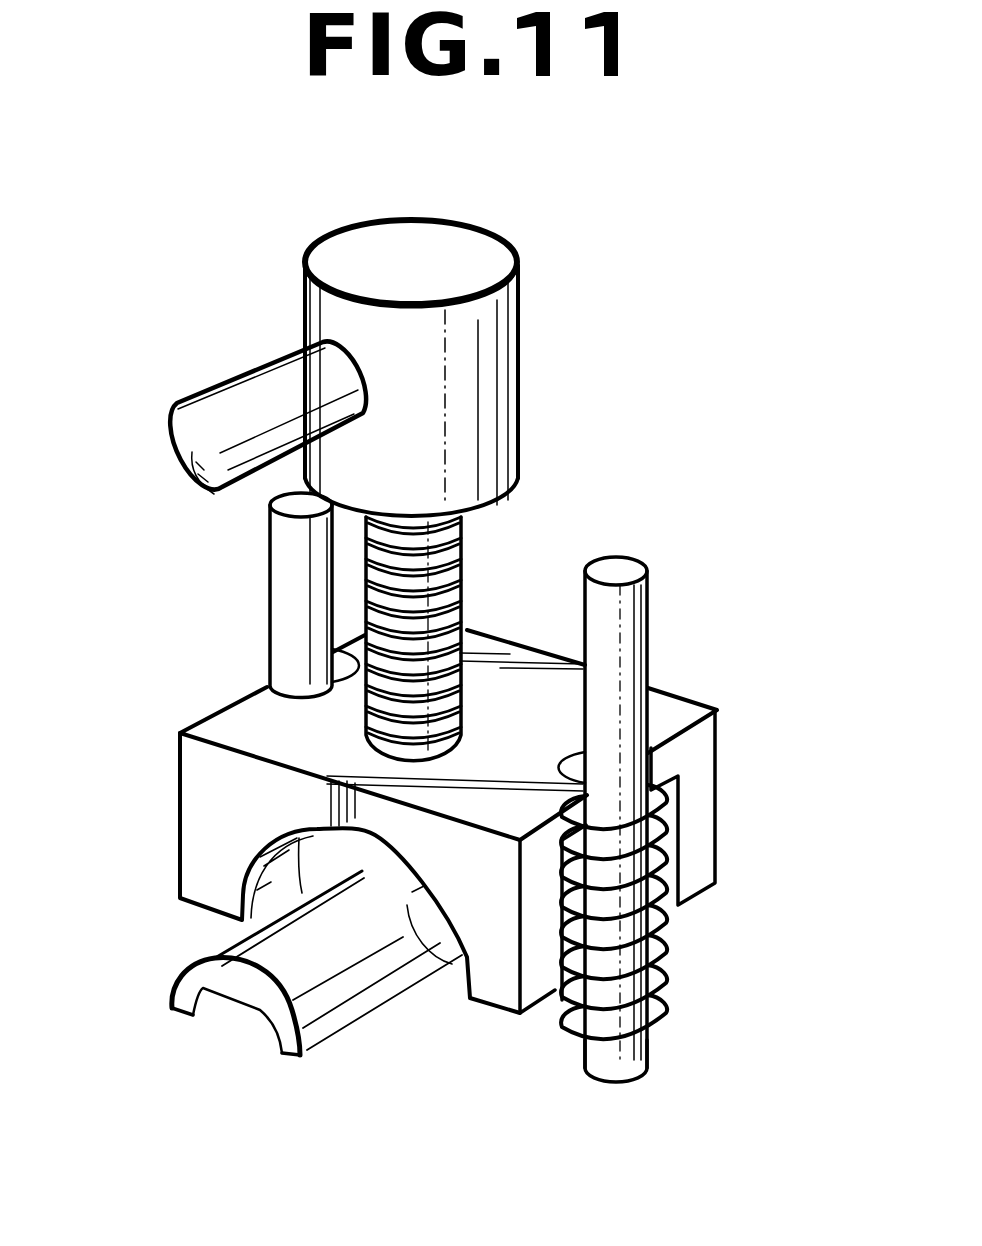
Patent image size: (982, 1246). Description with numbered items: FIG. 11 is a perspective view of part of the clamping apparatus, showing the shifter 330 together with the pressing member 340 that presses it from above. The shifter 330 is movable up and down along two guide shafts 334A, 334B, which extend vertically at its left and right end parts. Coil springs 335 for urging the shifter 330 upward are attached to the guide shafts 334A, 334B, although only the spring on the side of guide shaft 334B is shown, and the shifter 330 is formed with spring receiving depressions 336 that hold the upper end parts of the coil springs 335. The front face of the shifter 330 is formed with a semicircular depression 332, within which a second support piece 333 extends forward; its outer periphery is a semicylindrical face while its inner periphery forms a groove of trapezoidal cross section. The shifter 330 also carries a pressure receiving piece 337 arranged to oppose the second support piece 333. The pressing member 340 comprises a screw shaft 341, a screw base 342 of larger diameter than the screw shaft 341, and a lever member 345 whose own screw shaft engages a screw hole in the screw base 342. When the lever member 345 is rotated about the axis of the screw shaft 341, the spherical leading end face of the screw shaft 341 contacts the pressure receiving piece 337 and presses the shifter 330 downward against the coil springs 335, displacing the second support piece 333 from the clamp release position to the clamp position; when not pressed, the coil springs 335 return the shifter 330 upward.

The pressing member 340 is at (216, 334).
The screw base 342 is at (472, 352).
The lever member 345 is at (212, 414).
The screw shaft 341 is at (470, 567).
The guide shaft 334A is at (292, 580).
The guide shaft 334B is at (617, 618).
The coil spring 335 is at (660, 1022).
The spring receiving depression 336 is at (677, 868).
The shifter 330 is at (208, 780).
The pressure receiving piece 337 is at (366, 807).
The semicircular depression 332 is at (413, 892).
The second support piece 333 is at (185, 992).